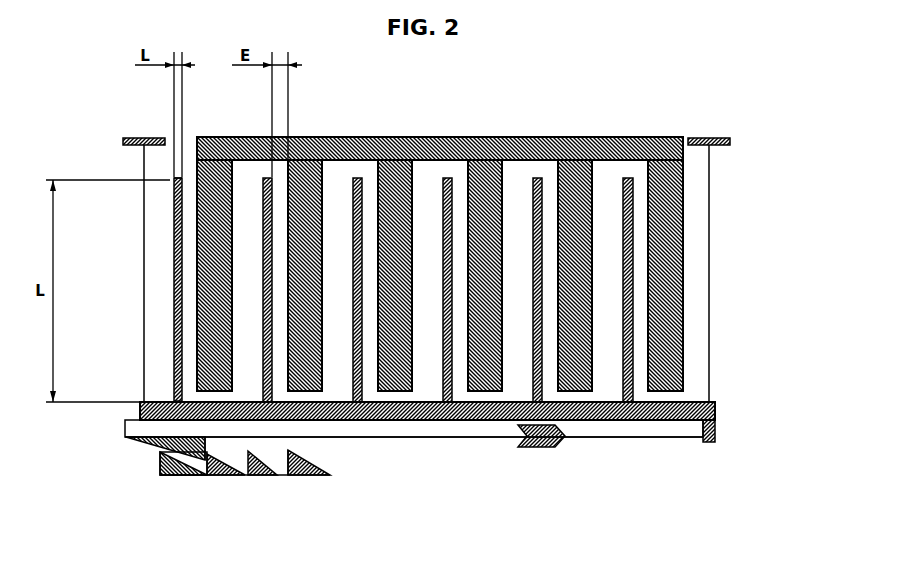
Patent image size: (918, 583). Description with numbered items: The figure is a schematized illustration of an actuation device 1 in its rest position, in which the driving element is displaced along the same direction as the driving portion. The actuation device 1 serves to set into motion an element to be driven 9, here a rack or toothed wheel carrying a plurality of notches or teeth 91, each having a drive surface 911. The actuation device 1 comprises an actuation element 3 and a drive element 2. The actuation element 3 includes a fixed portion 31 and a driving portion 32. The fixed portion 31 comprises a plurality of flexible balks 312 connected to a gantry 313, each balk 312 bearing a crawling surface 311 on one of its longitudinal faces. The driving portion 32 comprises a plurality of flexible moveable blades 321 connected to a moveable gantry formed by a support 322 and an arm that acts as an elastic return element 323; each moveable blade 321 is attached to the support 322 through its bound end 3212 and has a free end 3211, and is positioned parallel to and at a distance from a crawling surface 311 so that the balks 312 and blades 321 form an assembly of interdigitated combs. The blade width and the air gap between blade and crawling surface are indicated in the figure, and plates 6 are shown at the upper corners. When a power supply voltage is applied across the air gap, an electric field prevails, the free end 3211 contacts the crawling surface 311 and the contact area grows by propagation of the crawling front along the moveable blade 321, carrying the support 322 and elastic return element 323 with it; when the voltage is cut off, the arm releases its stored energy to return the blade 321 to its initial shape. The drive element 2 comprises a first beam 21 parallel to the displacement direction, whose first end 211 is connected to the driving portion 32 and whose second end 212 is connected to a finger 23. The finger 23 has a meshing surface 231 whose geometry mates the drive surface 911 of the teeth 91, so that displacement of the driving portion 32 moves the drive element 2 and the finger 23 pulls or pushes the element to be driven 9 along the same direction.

The actuation device 1 is at (512, 70).
The drive element 2 is at (492, 468).
The actuation element 3 is at (750, 243).
The cover plate 6 is at (144, 137).
The element to be driven 9 is at (168, 476).
The first beam 21 is at (432, 440).
The finger 23 is at (126, 437).
The fixed portion 31 is at (465, 150).
The driving portion 32 is at (132, 407).
The teeth 91 is at (316, 458).
The first end 211 is at (703, 442).
The second end 212 is at (206, 437).
The meshing surface 231 is at (205, 446).
The crawling surface 311 is at (373, 192).
The balk 312 is at (493, 195).
The gantry 313 is at (607, 148).
The moveable blade 321 is at (174, 292).
The support 322 is at (716, 408).
The elastic return element 323 is at (710, 318).
The drive surface 911 is at (284, 464).
The free end 3211 is at (178, 177).
The bound end 3212 is at (172, 394).